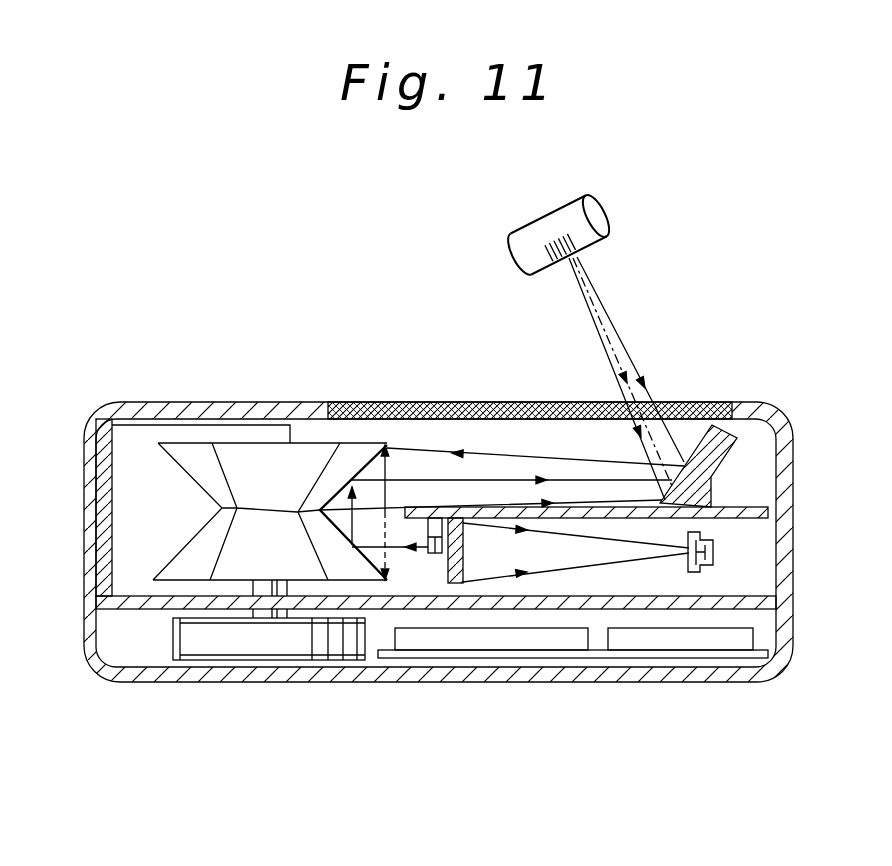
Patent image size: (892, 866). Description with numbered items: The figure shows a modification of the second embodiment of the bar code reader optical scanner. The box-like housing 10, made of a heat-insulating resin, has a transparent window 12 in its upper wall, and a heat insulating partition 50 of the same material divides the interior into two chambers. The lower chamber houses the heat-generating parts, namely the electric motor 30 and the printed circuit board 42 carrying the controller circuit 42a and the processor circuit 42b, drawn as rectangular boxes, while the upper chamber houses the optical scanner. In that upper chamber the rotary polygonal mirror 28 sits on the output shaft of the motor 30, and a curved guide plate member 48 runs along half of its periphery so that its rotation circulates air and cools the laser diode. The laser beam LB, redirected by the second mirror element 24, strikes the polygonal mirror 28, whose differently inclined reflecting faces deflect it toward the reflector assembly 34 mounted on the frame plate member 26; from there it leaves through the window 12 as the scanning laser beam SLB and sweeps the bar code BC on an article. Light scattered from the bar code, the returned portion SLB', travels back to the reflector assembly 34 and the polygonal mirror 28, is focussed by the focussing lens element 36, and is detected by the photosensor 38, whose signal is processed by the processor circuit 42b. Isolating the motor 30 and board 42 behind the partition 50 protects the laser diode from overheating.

The housing 10 is at (258, 392).
The transparent window 12 is at (472, 402).
The second mirror element 24 is at (430, 555).
The frame plate member 26 is at (643, 510).
The rotary polygonal mirror 28 is at (179, 470).
The electric motor 30 is at (228, 645).
The reflector assembly 34 is at (698, 432).
The focussing lens element 36 is at (463, 548).
The photosensor 38 is at (714, 550).
The printed circuit board 42 is at (590, 660).
The controller circuit 42a is at (480, 642).
The processor circuit 42b is at (690, 643).
The curved guide plate member 48 is at (136, 424).
The heat insulating partition 50 is at (643, 602).
The bar code BC is at (590, 246).
The laser beam LB is at (408, 478).
The scanning laser beam SLB is at (629, 378).
The scattered light SLB' is at (656, 372).